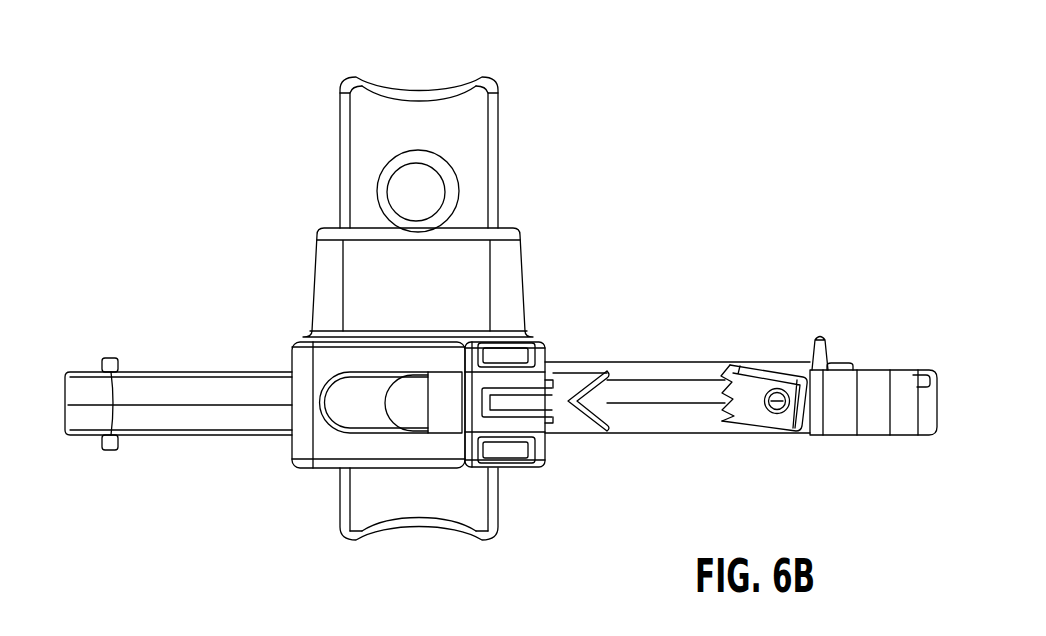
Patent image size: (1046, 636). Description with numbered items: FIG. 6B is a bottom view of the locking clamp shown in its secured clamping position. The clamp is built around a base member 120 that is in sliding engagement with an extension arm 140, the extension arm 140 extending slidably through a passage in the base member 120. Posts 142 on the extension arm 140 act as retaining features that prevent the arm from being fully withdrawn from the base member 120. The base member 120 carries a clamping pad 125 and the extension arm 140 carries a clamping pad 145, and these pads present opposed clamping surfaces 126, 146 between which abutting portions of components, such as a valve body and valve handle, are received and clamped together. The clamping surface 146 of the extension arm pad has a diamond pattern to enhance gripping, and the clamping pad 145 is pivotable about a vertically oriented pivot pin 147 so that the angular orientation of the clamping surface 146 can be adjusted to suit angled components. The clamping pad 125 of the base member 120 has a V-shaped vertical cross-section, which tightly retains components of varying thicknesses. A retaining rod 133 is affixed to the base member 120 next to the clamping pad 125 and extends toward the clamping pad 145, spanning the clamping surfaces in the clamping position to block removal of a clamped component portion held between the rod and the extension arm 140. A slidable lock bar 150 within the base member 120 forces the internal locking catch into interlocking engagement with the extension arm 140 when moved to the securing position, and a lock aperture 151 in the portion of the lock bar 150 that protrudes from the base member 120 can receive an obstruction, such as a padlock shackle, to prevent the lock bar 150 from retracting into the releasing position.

The base member 120 is at (490, 287).
The clamping pad 125 is at (567, 423).
The clamping surface 126 is at (605, 415).
The retaining rod 133 is at (658, 372).
The extension arm 140 is at (873, 390).
The post 142 is at (115, 355).
The clamping pad 145 is at (747, 427).
The clamping surface 146 is at (703, 365).
The pivot pin 147 is at (778, 408).
The lock bar 150 is at (363, 492).
The lock aperture 151 is at (403, 173).